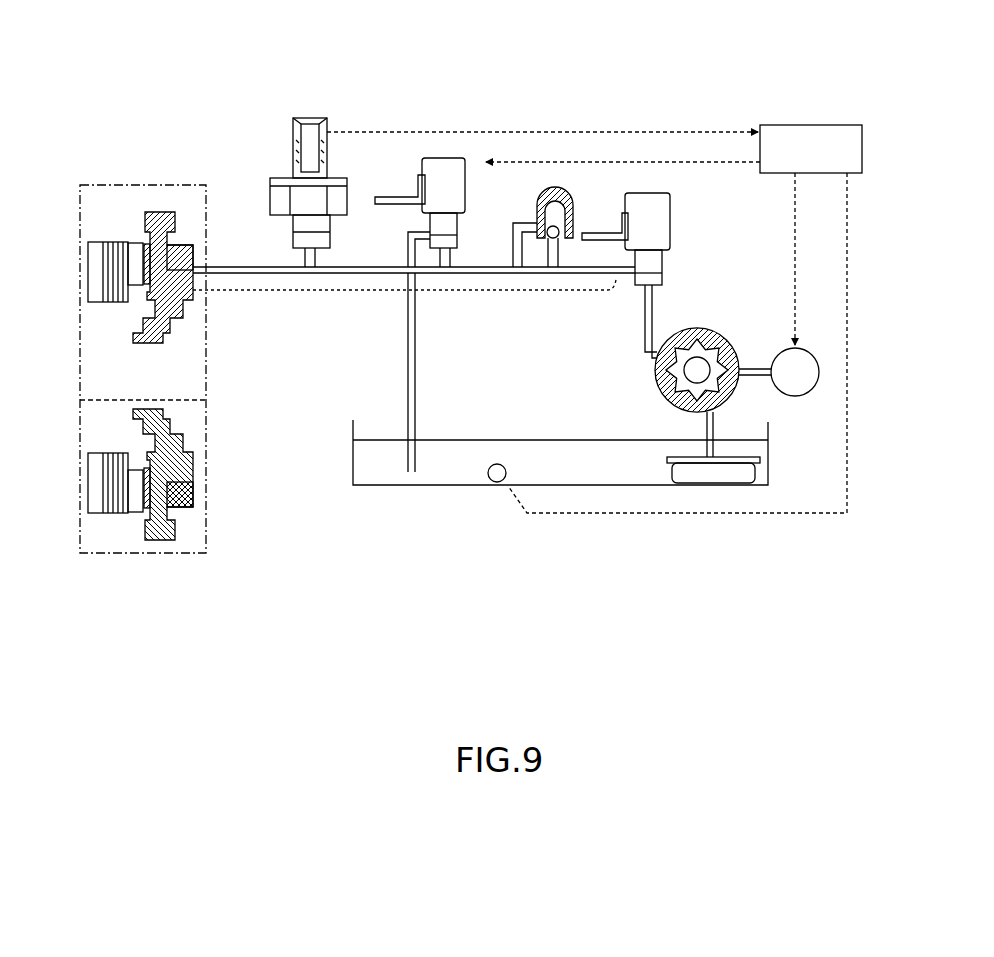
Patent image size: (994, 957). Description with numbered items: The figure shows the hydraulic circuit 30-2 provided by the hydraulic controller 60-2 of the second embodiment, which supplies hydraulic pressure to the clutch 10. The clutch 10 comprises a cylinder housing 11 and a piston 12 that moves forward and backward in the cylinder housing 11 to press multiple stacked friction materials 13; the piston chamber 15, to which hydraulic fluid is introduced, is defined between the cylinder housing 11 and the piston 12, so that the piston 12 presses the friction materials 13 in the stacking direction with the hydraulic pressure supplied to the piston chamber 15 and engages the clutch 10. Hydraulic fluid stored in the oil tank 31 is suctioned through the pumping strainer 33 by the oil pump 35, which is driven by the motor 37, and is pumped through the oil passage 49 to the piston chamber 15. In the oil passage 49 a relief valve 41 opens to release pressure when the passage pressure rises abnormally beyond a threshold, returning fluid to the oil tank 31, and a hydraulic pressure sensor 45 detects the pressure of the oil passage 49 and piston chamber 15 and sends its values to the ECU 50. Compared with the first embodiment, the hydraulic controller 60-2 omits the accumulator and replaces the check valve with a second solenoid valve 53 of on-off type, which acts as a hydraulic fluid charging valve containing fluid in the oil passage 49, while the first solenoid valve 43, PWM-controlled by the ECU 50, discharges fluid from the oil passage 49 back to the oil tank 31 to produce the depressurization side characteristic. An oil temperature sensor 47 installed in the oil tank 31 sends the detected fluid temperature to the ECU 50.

The clutch 10 is at (94, 184).
The cylinder housing 11 is at (165, 213).
The piston 12 is at (150, 243).
The friction materials 13 is at (113, 302).
The piston chamber 15 is at (188, 245).
The hydraulic circuit 30-2 is at (552, 104).
The oil tank 31 is at (773, 460).
The pumping strainer 33 is at (742, 448).
The oil pump 35 is at (706, 328).
The motor 37 is at (809, 343).
The relief valve 41 is at (579, 204).
The solenoid valve 43 is at (445, 158).
The hydraulic pressure sensor 45 is at (314, 112).
The oil temperature sensor 47 is at (489, 481).
The oil passage 49 is at (396, 290).
The ECU 50 is at (818, 125).
The second solenoid valve 53 is at (656, 193).
The hydraulic controller 60-2 is at (729, 68).